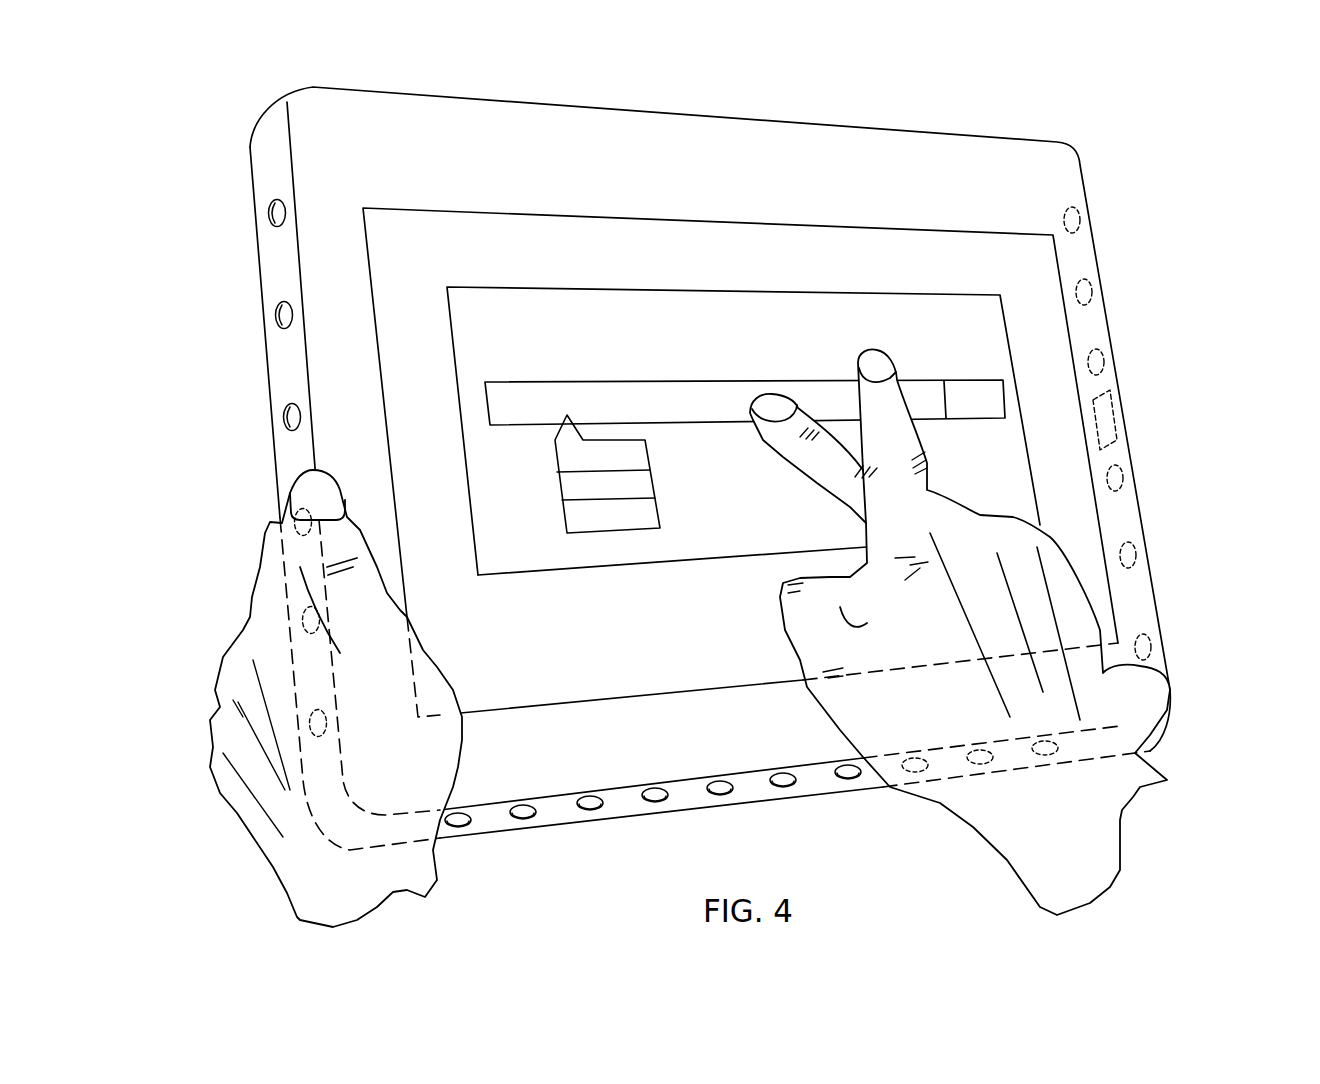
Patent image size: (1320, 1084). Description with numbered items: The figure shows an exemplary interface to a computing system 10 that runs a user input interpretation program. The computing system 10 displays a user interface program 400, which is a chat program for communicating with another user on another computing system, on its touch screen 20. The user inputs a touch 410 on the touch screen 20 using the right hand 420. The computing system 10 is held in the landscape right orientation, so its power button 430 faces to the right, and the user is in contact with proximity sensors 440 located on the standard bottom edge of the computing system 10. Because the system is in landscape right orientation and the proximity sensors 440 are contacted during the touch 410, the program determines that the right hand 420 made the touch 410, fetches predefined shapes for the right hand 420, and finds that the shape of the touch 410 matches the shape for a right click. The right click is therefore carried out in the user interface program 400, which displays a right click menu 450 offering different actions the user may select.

The computing system 10 is at (1017, 134).
The touch screen 20 is at (1033, 263).
The user interface program 400 is at (1010, 340).
The touch 410 is at (766, 393).
The right hand 420 is at (1100, 675).
The power button 430 is at (1113, 422).
The proximity sensors 440 is at (313, 710).
The right click menu 450 is at (562, 486).